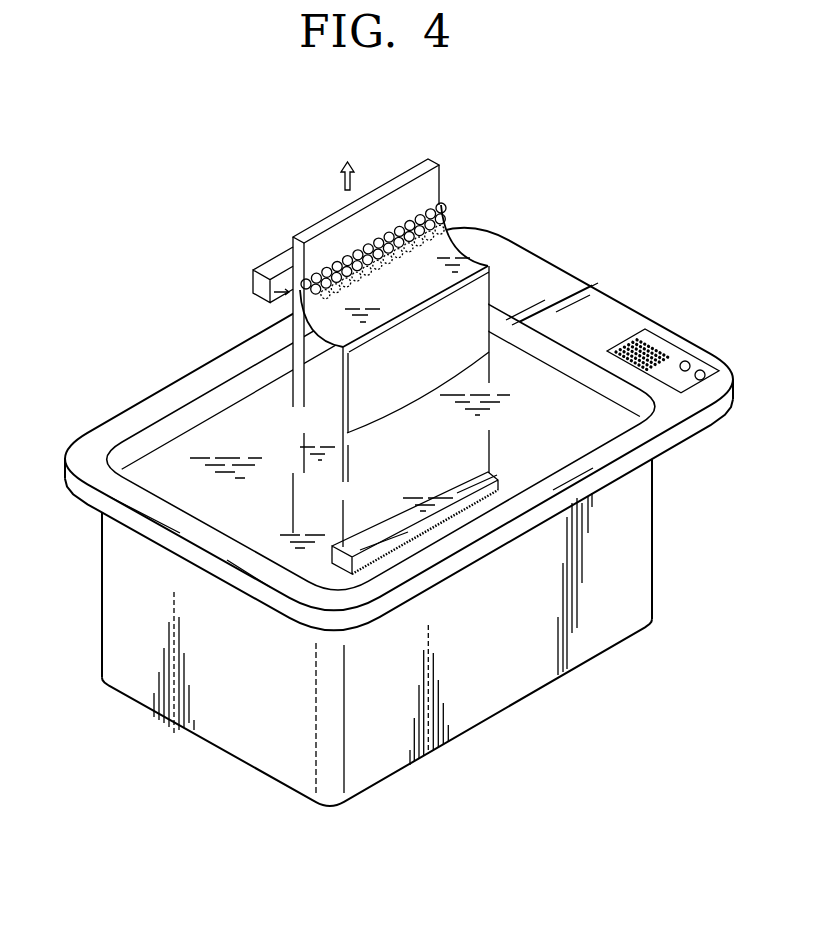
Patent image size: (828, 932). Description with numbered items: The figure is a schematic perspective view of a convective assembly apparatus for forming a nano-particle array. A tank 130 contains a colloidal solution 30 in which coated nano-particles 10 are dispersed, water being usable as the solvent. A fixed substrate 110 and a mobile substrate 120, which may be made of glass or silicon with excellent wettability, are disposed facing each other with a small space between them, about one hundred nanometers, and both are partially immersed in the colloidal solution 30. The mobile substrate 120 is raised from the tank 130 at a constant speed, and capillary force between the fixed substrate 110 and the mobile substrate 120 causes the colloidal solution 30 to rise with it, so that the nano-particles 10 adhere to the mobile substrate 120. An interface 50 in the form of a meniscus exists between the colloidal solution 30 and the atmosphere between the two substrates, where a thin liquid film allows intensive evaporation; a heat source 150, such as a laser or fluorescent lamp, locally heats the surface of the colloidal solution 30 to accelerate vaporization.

The nano-particle 10 is at (408, 218).
The colloidal solution 30 is at (227, 423).
The interface 50 is at (460, 240).
The fixed substrate 110 is at (493, 272).
The mobile substrate 120 is at (436, 157).
The tank 130 is at (610, 308).
The heat source 150 is at (270, 268).